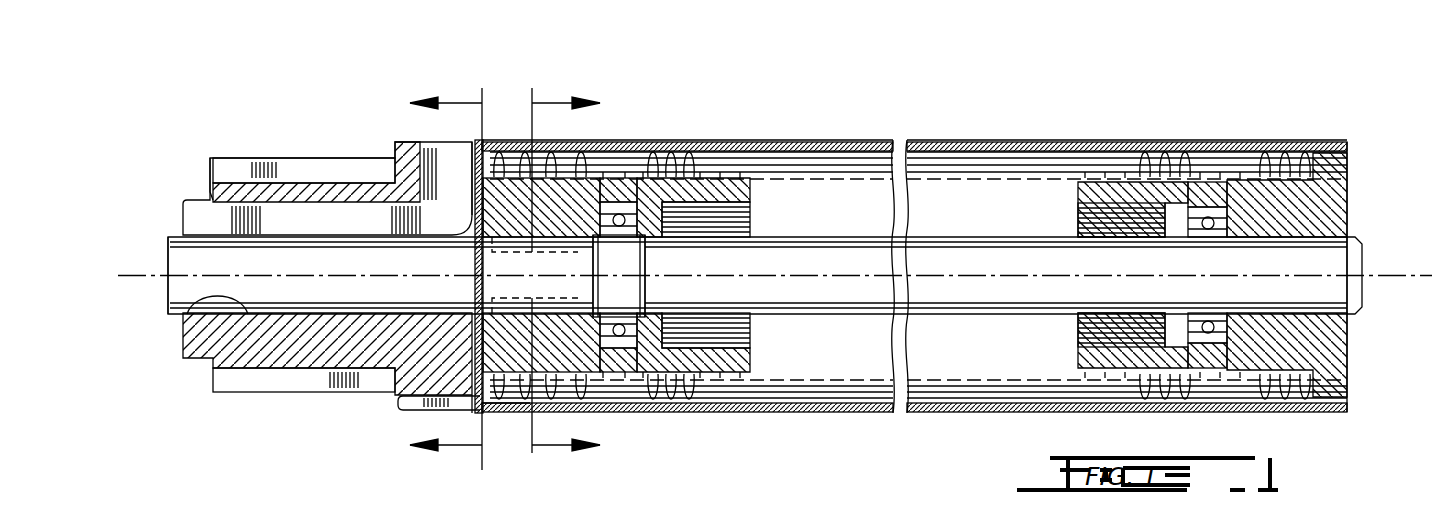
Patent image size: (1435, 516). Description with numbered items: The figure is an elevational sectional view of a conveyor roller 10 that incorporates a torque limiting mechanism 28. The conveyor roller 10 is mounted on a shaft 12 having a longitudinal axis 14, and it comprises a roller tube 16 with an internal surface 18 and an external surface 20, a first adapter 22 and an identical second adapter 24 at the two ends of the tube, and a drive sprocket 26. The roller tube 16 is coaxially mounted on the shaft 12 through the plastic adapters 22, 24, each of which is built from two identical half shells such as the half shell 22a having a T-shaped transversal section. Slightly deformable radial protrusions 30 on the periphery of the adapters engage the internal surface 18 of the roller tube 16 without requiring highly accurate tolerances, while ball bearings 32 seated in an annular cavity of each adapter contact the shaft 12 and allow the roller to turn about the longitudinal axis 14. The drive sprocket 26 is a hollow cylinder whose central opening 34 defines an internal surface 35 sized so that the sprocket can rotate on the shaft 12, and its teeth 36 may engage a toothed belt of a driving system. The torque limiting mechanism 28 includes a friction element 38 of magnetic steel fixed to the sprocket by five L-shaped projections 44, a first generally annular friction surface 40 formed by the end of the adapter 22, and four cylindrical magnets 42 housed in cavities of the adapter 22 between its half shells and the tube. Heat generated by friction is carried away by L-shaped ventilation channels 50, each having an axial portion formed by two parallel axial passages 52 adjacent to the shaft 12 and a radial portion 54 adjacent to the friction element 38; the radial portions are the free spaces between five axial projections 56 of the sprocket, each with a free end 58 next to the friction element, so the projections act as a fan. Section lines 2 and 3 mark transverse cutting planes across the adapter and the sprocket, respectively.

The conveyor roller 10 is at (863, 84).
The shaft 12 is at (1335, 265).
The longitudinal axis 14 is at (1390, 279).
The roller tube 16 is at (990, 143).
The internal surface 18 is at (1033, 143).
The external surface 20 is at (1117, 143).
The first adapter 22 is at (650, 190).
The half shell 22a is at (684, 347).
The second adapter 24 is at (1258, 210).
The drive sprocket 26 is at (257, 200).
The torque limiting mechanism 28 is at (470, 120).
The radial protrusions 30 is at (688, 160).
The ball bearings 32 is at (660, 358).
The central opening 34 is at (188, 232).
The internal surface 35 is at (182, 315).
The teeth 36 is at (343, 160).
The friction element 38 is at (455, 435).
The first annular friction surface 40 is at (485, 138).
The cylindrical magnets 42 is at (600, 143).
The L-shaped projections 44 is at (417, 410).
The ventilation channel 50 is at (368, 205).
The axial passages 52 is at (275, 200).
The radial portion 54 is at (450, 143).
The axial projections 56 is at (418, 368).
The free end 58 is at (505, 412).
The section line 2- 2 is at (556, 273).
The section line 3- 3 is at (457, 273).